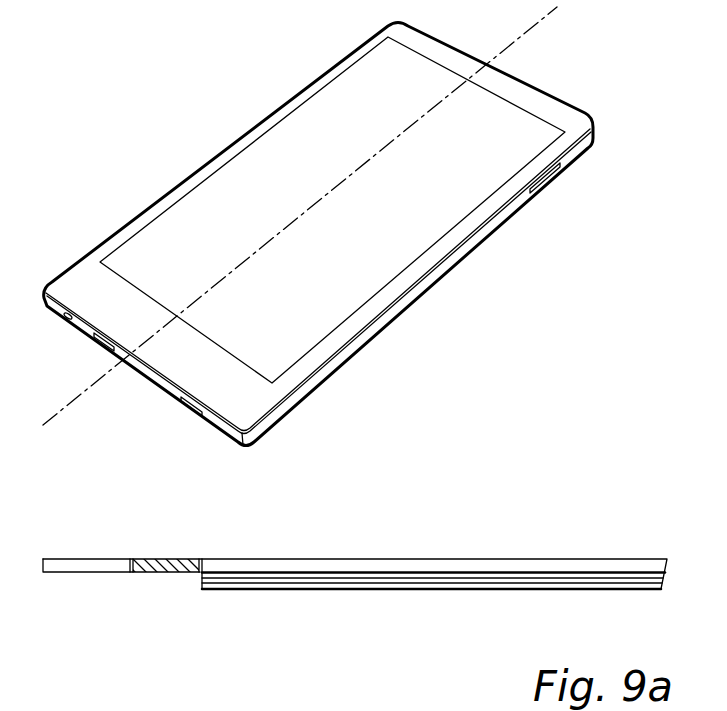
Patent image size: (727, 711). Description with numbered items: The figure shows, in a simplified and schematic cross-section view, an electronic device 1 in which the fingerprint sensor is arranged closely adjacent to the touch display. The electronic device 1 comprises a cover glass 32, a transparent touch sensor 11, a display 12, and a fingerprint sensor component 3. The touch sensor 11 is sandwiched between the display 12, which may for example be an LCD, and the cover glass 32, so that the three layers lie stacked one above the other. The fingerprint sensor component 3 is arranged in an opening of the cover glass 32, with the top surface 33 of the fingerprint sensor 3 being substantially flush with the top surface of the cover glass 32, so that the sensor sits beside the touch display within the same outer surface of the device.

The electronic device 1 is at (460, 510).
The fingerprint sensor component 3 is at (157, 573).
The top surface 33 is at (170, 557).
The cover glass 32 is at (597, 567).
The touch sensor 11 is at (627, 577).
The display 12 is at (557, 590).